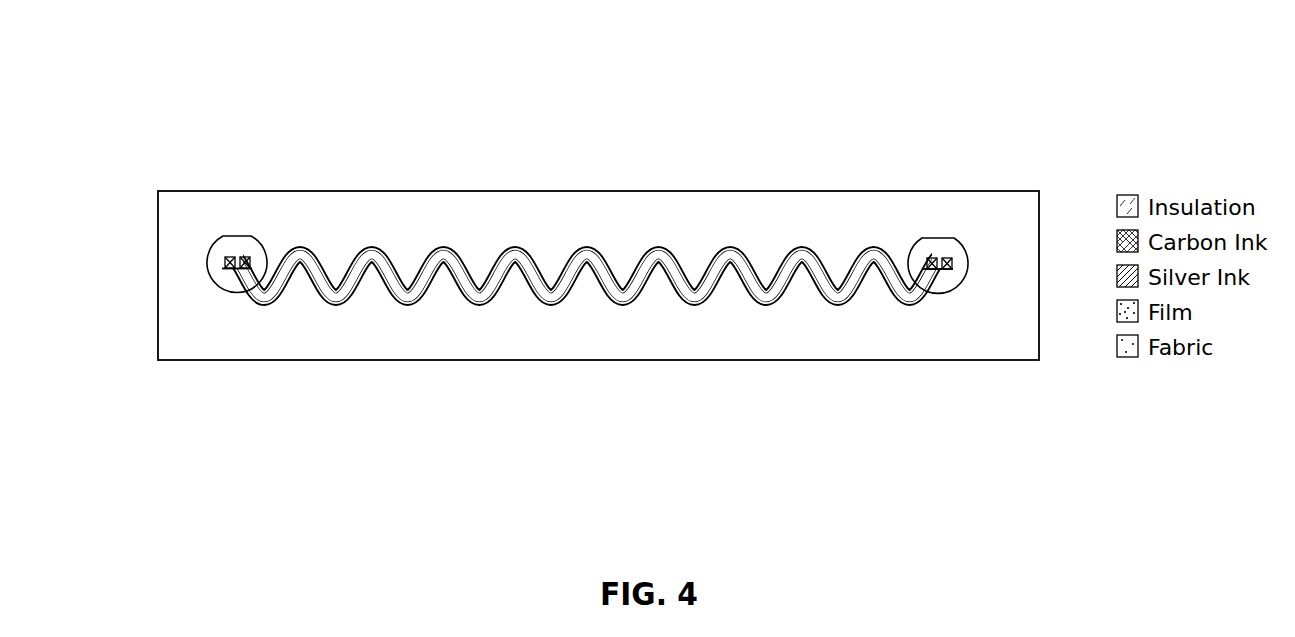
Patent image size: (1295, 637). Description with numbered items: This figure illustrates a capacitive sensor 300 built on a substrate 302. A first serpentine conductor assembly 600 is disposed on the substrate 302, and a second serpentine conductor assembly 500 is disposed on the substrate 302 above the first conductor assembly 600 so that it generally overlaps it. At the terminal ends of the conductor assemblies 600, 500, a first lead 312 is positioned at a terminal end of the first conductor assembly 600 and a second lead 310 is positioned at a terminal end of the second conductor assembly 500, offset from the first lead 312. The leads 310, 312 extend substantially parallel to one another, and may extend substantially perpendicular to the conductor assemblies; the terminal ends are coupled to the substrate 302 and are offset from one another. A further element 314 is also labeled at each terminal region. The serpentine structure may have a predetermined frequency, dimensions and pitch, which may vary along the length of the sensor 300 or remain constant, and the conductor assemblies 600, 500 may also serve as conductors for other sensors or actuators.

The sensor 300 is at (553, 224).
The substrate 302 is at (342, 226).
The second lead 310 is at (247, 258).
The first lead 312 is at (227, 268).
The film patch 314 is at (232, 248).
The second conductor assembly 500 is at (477, 300).
The first conductor assembly 600 is at (228, 272).